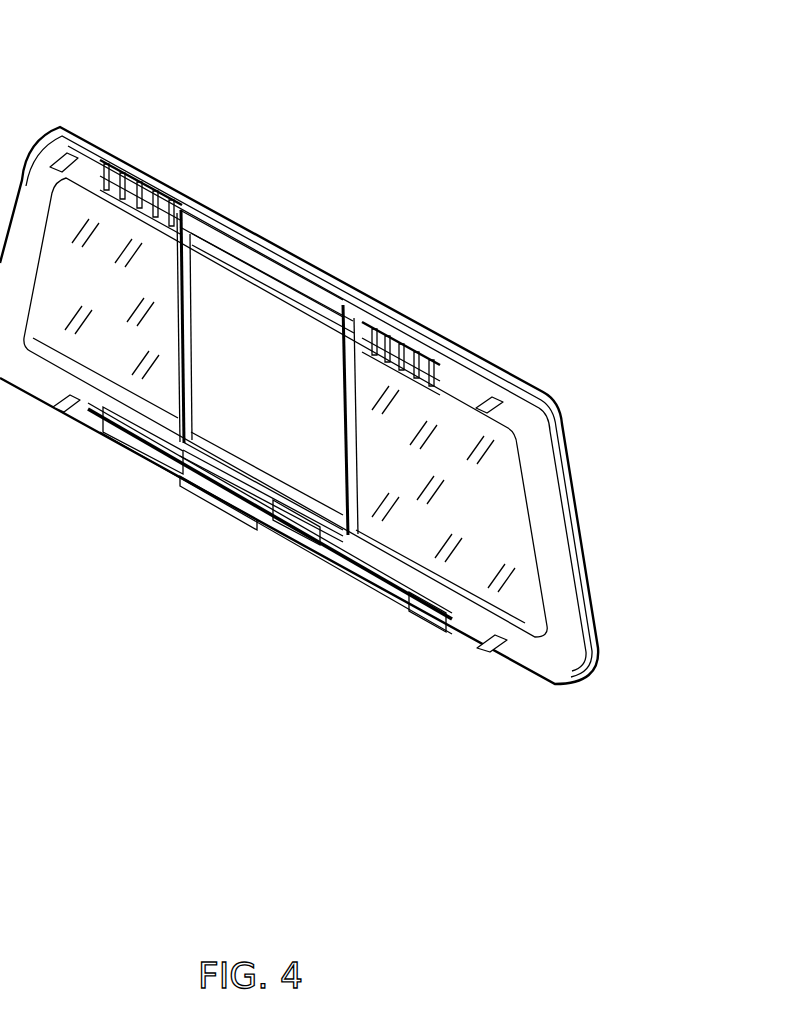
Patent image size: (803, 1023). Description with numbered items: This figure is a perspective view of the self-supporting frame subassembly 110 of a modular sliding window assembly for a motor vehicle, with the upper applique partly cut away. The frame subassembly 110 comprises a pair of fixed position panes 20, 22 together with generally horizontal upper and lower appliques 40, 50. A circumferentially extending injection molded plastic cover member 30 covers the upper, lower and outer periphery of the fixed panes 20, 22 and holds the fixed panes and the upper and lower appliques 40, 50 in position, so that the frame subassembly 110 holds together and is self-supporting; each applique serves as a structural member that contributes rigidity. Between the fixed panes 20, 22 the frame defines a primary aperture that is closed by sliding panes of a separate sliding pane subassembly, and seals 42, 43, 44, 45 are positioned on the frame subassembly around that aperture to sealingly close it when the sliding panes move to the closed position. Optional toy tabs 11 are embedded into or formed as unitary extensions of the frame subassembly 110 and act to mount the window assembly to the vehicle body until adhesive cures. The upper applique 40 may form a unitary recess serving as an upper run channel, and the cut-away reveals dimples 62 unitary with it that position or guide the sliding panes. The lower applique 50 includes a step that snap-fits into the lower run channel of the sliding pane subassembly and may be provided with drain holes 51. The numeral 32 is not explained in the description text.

The frame subassembly 110 is at (368, 185).
The toy tab 11 is at (58, 152).
The fixed position pane 20 is at (112, 299).
The fixed position pane 22 is at (443, 489).
The plastic cover member 30 is at (558, 556).
The frame edge 32 is at (555, 408).
The upper applique 40 is at (345, 351).
The seal 42 is at (243, 248).
The seal 43 is at (343, 425).
The seal 44 is at (236, 472).
The seal 45 is at (182, 274).
The lower applique 50 is at (270, 556).
The drain hole 51 is at (173, 468).
The dimple 62 is at (136, 190).